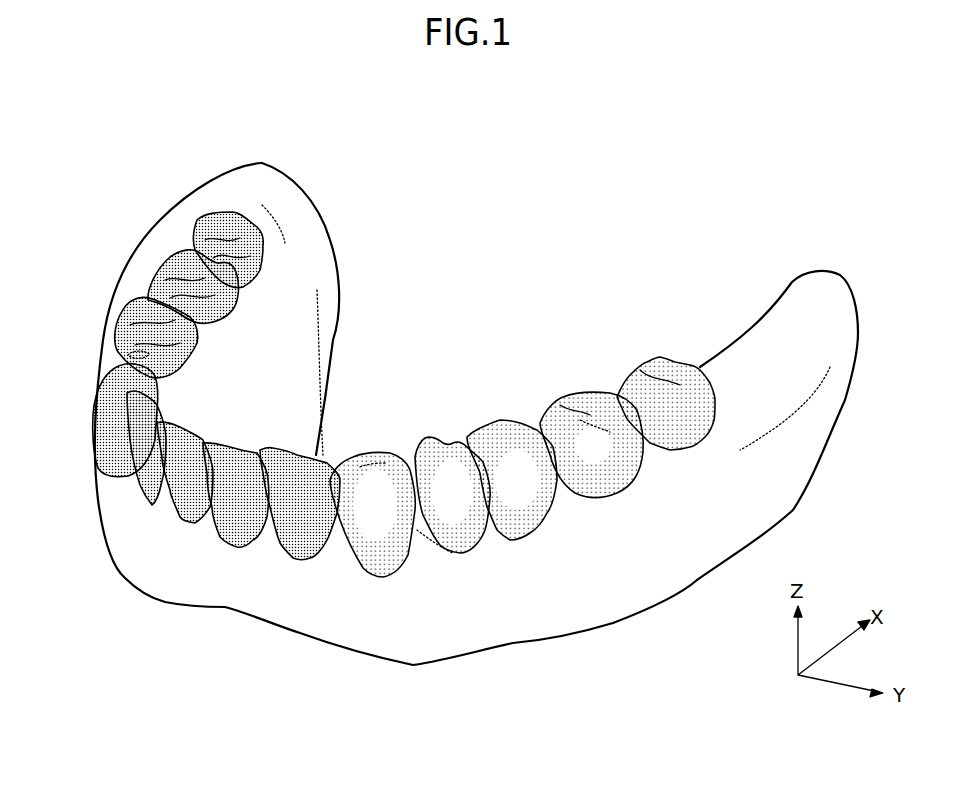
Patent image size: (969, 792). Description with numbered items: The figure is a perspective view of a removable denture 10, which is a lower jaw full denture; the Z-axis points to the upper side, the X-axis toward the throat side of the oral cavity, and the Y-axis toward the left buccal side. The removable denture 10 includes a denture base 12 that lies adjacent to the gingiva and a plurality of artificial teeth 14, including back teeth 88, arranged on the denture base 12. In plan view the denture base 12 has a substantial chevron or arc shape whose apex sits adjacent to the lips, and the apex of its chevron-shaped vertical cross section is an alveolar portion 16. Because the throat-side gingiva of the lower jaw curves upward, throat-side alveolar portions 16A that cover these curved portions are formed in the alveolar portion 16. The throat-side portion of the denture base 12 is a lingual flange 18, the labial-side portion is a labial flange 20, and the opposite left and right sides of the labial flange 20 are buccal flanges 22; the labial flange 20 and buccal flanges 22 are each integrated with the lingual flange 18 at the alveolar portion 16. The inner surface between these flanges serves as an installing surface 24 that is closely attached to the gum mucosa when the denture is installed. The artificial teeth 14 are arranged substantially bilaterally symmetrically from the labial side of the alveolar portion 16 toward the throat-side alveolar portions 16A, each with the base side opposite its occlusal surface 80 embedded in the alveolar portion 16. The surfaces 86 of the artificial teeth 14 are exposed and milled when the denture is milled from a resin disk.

The removable denture 10 is at (467, 223).
The denture base 12 is at (280, 631).
The artificial teeth 14 is at (200, 338).
The alveolar portion 16 is at (568, 503).
The throat-side alveolar portions 16A is at (257, 180).
The lingual flange 18 is at (305, 373).
The labial flange 20 is at (235, 573).
The buccal flanges 22 is at (136, 235).
The installing surface 24 is at (610, 596).
The occlusal surface 80 is at (123, 342).
The surfaces of the artificial teeth 86 is at (373, 507).
The back teeth 88 is at (197, 217).